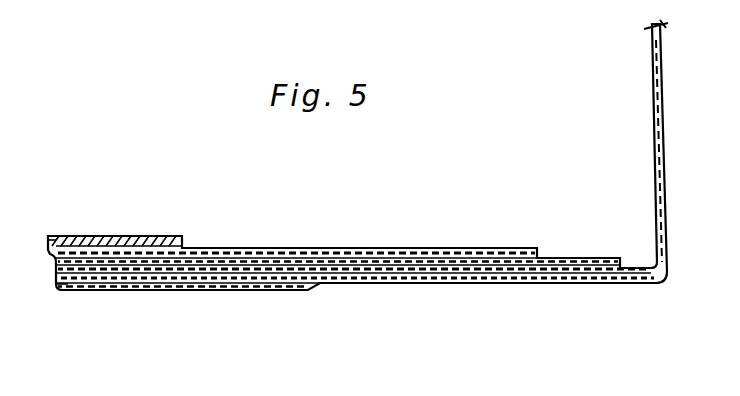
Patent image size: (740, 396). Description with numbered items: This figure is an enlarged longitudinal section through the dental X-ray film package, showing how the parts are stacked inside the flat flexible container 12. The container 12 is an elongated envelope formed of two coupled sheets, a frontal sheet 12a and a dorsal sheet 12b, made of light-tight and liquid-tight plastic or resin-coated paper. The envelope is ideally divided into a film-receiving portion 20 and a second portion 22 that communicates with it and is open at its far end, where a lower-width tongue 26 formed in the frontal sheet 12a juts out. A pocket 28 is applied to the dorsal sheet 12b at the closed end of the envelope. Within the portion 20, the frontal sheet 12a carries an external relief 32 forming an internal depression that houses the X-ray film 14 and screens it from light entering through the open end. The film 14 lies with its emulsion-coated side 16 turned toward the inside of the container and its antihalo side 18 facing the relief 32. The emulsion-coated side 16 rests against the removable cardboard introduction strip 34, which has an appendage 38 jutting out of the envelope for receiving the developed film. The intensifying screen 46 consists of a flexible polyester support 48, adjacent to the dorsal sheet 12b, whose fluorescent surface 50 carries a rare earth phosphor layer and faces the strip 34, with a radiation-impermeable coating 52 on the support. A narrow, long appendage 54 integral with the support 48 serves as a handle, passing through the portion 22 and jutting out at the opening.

The flat flexible container 12 is at (361, 238).
The frontal sheet 12a is at (367, 284).
The dorsal sheet 12b is at (425, 247).
The X-ray film 14 is at (162, 294).
The emulsion-coated side 16 is at (96, 292).
The antihalo side 18 is at (126, 292).
The film-receiving portion 20 is at (60, 300).
The second portion 22 is at (509, 294).
The tongue 26 is at (612, 284).
The pocket 28 is at (136, 236).
The external relief 32 is at (188, 296).
The introduction strip 34 is at (332, 284).
The appendage 38 is at (655, 140).
The intensifying screen 46 is at (282, 240).
The support 48 is at (272, 288).
The fluorescent surface 50 is at (76, 236).
The radiation-impermeable coating 52 is at (226, 248).
The appendage 54 is at (560, 258).